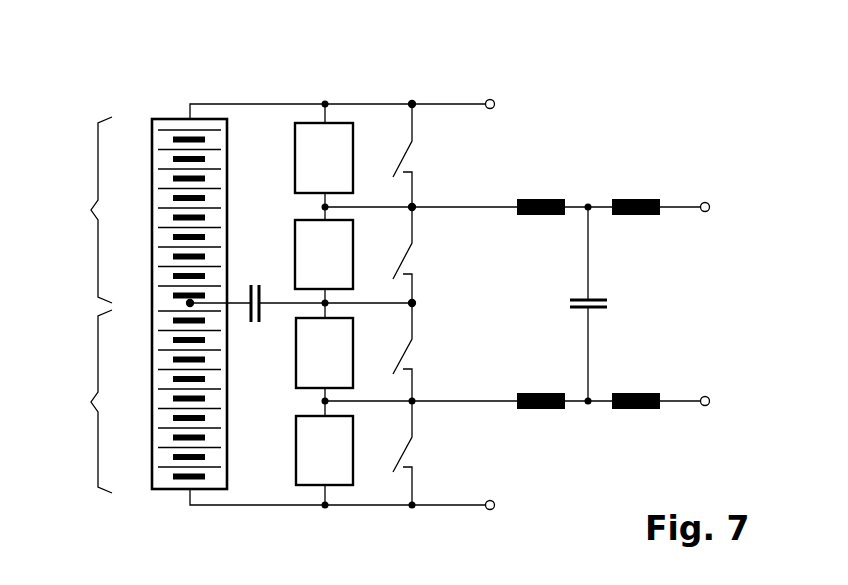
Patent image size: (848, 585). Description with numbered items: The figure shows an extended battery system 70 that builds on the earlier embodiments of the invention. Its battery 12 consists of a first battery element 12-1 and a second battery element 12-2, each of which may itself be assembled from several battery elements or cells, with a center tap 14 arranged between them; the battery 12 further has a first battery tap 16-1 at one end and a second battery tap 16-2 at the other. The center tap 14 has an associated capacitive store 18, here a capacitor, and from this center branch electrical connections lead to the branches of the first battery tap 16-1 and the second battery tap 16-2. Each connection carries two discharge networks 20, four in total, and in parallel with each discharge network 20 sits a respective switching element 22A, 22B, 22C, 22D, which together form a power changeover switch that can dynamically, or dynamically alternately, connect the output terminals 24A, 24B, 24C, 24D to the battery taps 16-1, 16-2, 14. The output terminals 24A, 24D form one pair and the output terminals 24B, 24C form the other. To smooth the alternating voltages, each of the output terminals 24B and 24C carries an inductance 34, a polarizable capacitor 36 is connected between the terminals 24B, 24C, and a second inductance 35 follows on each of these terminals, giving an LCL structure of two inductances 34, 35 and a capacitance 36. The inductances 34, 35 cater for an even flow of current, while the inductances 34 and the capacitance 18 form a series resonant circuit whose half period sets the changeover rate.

The battery system 70 is at (128, 83).
The battery 12 is at (152, 120).
The first battery element 12-1 is at (76, 210).
The second battery element 12-2 is at (76, 401).
The center tap 14 is at (188, 303).
The first battery tap 16-1 is at (186, 118).
The second battery tap 16-2 is at (188, 491).
The capacitive store 18 is at (257, 326).
The discharge network 20 is at (295, 163).
The switching element 22A is at (404, 157).
The switching element 22B is at (404, 259).
The switching element 22C is at (404, 352).
The switching element 22D is at (404, 449).
The output terminal 24A is at (495, 106).
The output terminal 24B is at (710, 209).
The output terminal 24C is at (710, 403).
The output terminal 24D is at (495, 507).
The inductance 34 is at (555, 216).
The second inductance 35 is at (627, 216).
The capacitor 36 is at (601, 312).